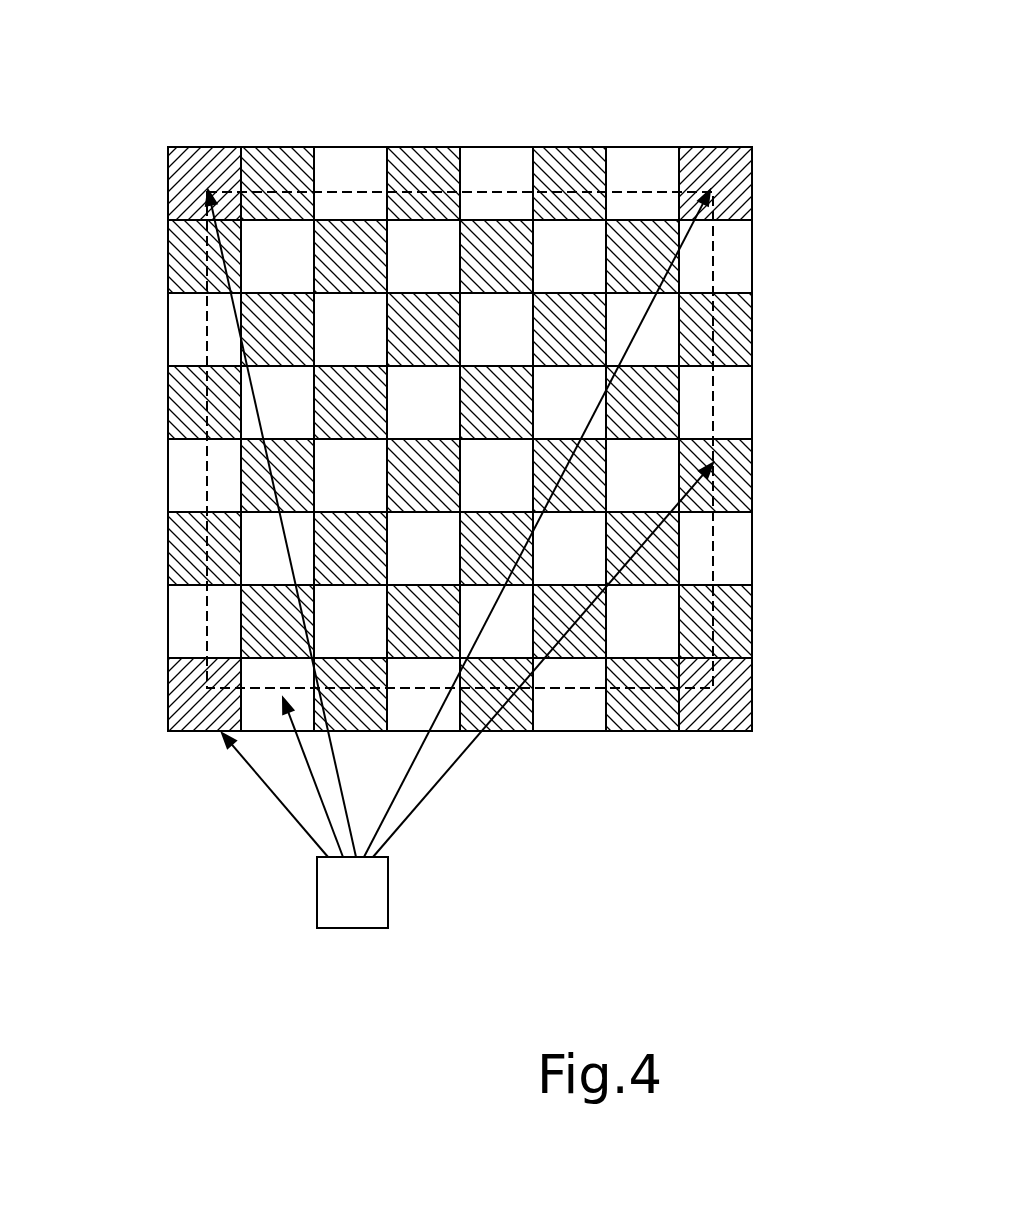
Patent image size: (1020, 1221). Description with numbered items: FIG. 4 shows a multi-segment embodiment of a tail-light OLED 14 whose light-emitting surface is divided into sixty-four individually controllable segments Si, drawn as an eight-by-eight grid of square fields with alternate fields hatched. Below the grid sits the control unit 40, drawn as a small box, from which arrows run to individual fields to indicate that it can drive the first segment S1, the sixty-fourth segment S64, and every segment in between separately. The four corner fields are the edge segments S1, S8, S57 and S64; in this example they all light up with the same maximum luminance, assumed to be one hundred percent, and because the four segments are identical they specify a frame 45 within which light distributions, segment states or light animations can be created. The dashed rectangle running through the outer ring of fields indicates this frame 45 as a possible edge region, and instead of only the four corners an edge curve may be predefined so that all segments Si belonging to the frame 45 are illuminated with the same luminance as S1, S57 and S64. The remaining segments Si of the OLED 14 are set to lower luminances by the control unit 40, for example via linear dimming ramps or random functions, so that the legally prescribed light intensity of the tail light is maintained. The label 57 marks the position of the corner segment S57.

The OLED 14 is at (460, 403).
The control unit 40 is at (358, 928).
The frame 45 is at (352, 190).
The sensor element position 57 is at (208, 147).
The segments Si is at (413, 248).
The first segment S1 is at (187, 731).
The segment S8 is at (710, 731).
The segment S57 is at (168, 185).
The 64th segment S64 is at (752, 175).